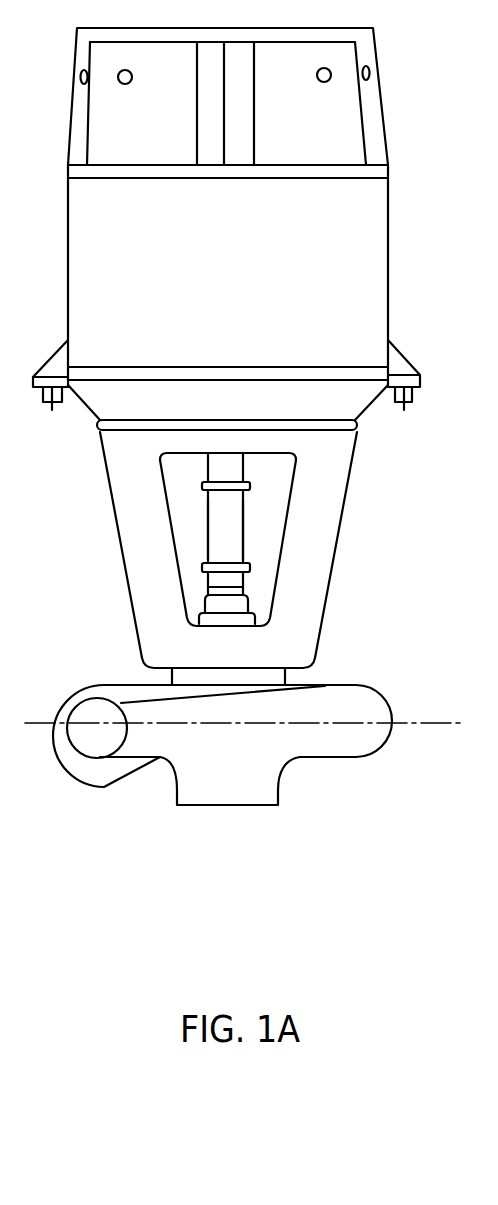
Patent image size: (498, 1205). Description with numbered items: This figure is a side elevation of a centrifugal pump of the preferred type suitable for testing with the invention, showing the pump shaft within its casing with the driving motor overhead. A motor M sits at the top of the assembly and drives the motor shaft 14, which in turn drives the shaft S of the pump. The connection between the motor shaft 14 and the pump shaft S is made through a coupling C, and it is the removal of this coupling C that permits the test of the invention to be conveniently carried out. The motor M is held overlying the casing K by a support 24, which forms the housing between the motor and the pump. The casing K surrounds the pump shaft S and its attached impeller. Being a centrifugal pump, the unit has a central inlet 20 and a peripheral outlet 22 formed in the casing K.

The motor M is at (236, 303).
The support 24 is at (118, 540).
The motor shaft 14 is at (243, 468).
The coupling C is at (243, 517).
The shaft S is at (243, 578).
The casing K is at (345, 686).
The peripheral outlet 22 is at (90, 740).
The central inlet 20 is at (251, 824).